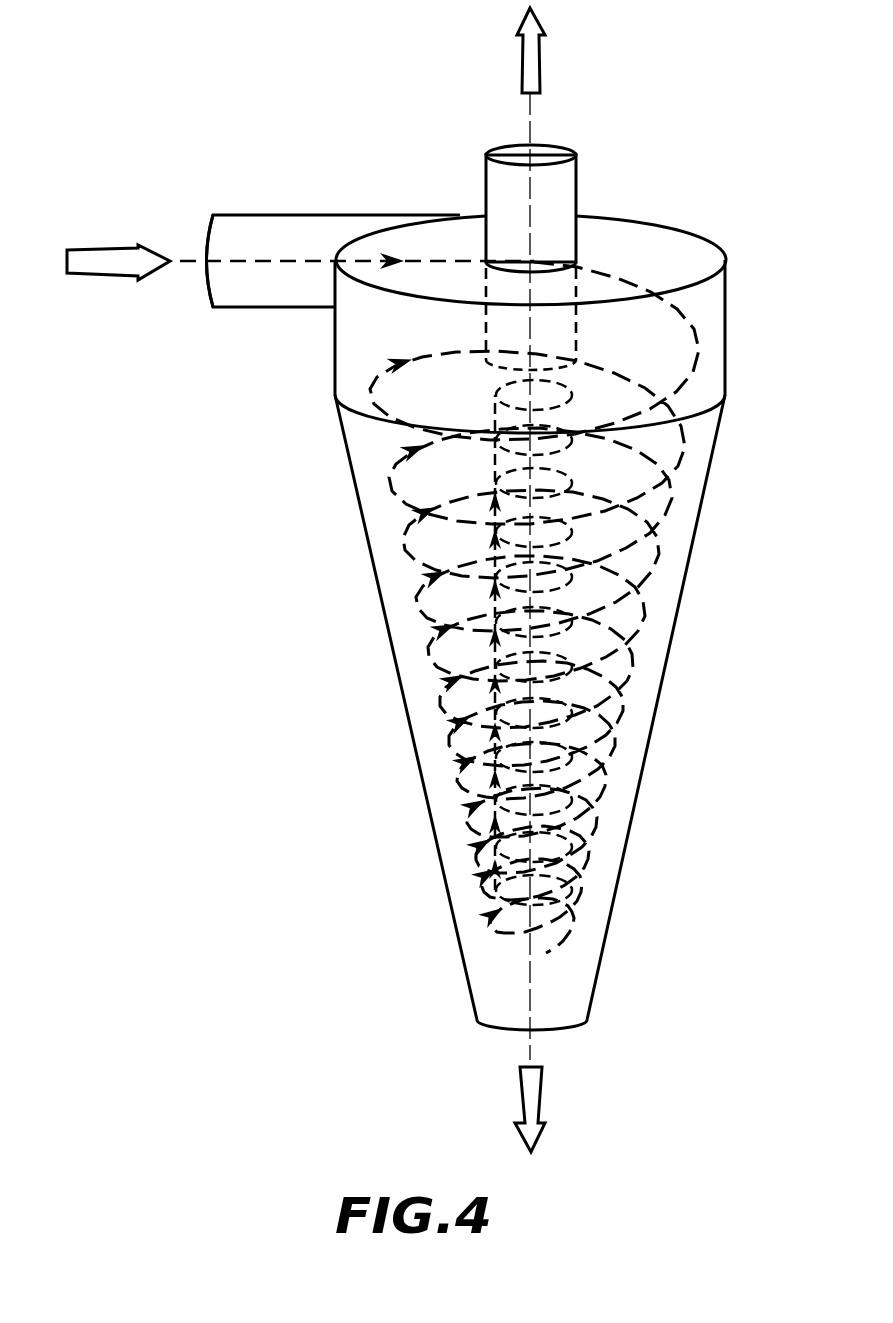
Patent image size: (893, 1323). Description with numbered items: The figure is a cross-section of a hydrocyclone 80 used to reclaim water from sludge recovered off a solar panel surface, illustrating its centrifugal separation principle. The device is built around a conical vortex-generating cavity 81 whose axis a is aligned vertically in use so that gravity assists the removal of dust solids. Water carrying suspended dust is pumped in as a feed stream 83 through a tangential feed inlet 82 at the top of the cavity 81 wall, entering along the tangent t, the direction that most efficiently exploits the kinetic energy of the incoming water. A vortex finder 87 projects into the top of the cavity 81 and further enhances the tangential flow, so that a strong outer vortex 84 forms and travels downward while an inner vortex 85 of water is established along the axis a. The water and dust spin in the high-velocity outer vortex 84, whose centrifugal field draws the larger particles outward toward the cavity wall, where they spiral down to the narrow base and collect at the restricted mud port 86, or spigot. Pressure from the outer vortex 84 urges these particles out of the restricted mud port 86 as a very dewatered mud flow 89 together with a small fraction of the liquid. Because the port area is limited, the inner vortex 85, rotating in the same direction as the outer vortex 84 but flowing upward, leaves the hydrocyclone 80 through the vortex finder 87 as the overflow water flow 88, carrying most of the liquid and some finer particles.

The hydrocyclone 80 is at (467, 608).
The conical vortex-generating cavity 81 is at (406, 703).
The tangential feed inlet 82 is at (333, 222).
The inlet feed stream 83 is at (110, 268).
The outer vortex 84 is at (690, 332).
The inner vortex 85 is at (570, 390).
The restricted mud port 86 is at (480, 1020).
The vortex finder 87 is at (490, 331).
The water flow 88 is at (535, 68).
The mud flow 89 is at (535, 1100).
The axis a is at (540, 120).
The tangent t is at (295, 258).